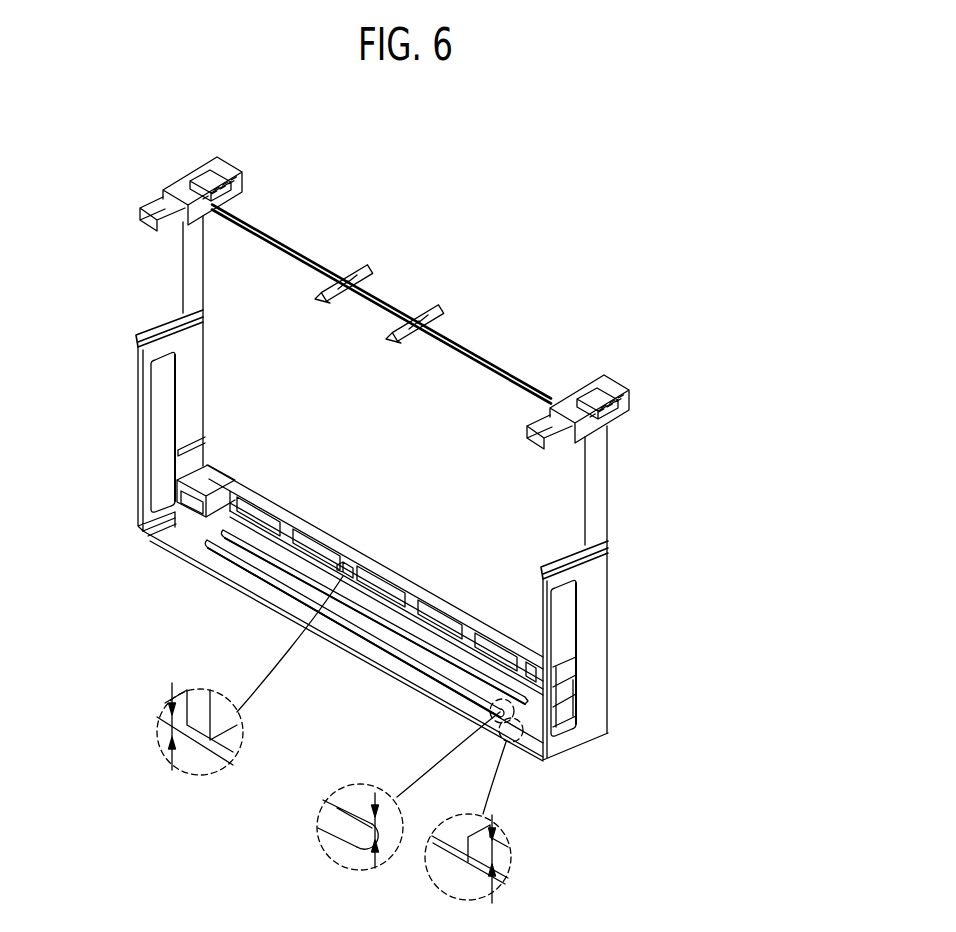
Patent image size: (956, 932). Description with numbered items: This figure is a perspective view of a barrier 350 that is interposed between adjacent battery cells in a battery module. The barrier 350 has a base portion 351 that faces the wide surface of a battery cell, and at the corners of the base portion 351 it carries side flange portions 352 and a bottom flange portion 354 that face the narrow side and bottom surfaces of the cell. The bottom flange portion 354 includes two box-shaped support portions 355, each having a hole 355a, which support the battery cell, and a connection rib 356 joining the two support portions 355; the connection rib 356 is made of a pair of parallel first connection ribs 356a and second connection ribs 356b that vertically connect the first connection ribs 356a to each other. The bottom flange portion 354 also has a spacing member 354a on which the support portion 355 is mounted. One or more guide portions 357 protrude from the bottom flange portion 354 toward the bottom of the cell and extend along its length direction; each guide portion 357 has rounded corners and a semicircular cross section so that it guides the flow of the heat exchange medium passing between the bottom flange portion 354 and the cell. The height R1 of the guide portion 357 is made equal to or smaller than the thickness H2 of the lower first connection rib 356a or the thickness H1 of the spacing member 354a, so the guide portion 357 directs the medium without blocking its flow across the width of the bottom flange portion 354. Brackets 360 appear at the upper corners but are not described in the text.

The barrier 350 is at (552, 288).
The base portion 351 is at (290, 488).
The side flange portions 352 is at (121, 427).
The bottom flange portion 354 is at (278, 594).
The spacing member 354a is at (157, 522).
The support portion 355 is at (200, 482).
The hole 355a is at (197, 505).
The connection rib 356 is at (362, 770).
The first connection ribs 356a is at (445, 580).
The second connection ribs 356b is at (420, 572).
The guide portion 357 is at (207, 547).
The end bracket 360 is at (247, 144).
The thickness of the spacing member H1 is at (507, 868).
The thickness of the lower first connection rib H2 is at (162, 718).
The height of the guide portion R1 is at (375, 865).